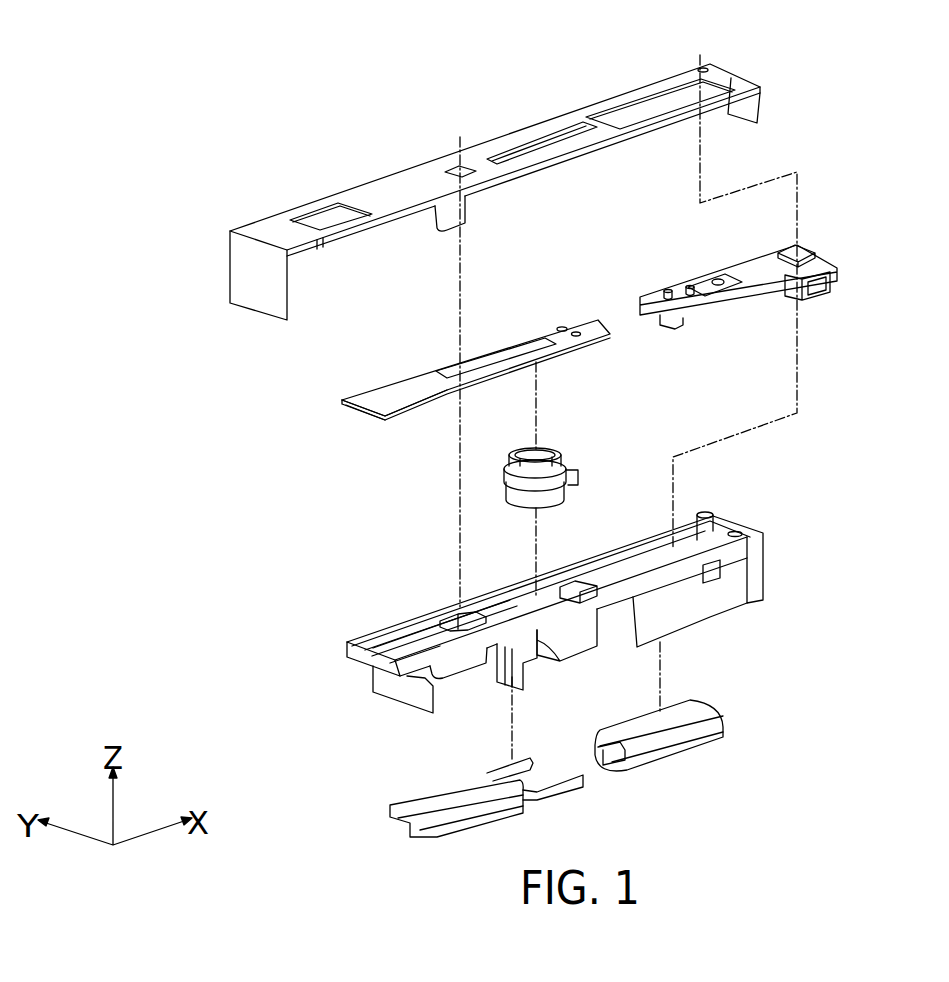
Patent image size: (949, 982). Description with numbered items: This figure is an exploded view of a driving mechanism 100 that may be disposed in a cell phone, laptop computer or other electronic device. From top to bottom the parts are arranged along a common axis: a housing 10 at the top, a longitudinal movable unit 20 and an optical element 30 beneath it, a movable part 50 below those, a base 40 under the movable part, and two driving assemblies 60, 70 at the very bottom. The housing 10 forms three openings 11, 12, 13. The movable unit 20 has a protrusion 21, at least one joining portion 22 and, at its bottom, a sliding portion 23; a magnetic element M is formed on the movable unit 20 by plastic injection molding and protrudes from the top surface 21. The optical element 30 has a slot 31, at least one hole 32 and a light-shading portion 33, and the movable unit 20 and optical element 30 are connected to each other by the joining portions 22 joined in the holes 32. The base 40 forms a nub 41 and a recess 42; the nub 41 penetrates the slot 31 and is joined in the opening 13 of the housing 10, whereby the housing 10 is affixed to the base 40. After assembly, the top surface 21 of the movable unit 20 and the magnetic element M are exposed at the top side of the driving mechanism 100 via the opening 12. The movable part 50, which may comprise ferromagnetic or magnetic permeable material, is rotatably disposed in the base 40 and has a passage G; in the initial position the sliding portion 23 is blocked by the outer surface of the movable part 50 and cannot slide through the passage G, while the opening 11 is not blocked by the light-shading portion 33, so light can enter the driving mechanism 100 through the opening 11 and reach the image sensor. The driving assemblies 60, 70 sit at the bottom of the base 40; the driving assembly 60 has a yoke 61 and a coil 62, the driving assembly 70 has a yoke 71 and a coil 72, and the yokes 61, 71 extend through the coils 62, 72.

The driving mechanism 100 is at (226, 58).
The housing 10 is at (535, 174).
The opening 11 is at (320, 217).
The opening 12 is at (652, 106).
The opening 13 is at (449, 170).
The longitudinal movable unit 20 is at (783, 292).
The protrusion (top surface) 21 is at (743, 272).
The joining portion 22 is at (690, 286).
The sliding portion 23 is at (672, 322).
The magnetic element M is at (826, 292).
The optical element 30 is at (434, 340).
The slot 31 is at (504, 347).
The hole 32 is at (576, 331).
The light-shading portion 33 is at (342, 402).
The passage G is at (540, 462).
The movable part 50 is at (569, 448).
The base 40 is at (599, 597).
The nub 41 is at (455, 612).
The recess 42 is at (624, 570).
The driving assembly 60 is at (441, 783).
The yoke 61 is at (490, 772).
The coil 62 is at (460, 805).
The driving assembly 70 is at (680, 729).
The yoke 71 is at (612, 748).
The coil 72 is at (645, 727).